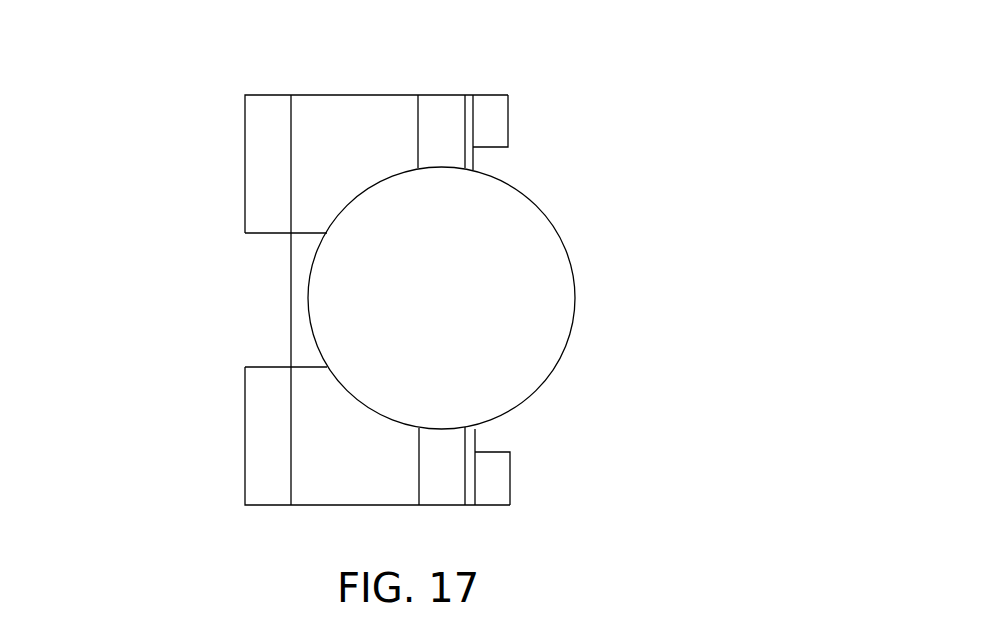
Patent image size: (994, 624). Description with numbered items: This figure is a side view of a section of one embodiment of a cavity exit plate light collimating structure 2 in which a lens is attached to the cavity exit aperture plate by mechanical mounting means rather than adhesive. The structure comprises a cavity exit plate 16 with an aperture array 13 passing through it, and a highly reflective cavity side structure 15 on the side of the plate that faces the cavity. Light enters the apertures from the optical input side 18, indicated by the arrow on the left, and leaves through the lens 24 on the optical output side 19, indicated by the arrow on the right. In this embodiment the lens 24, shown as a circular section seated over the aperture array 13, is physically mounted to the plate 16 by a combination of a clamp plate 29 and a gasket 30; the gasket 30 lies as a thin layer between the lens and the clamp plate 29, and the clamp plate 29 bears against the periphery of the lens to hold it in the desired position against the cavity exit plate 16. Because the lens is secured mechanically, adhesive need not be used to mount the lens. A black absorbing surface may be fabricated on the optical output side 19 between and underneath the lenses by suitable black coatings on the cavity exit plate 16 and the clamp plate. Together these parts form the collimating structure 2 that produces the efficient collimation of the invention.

The cavity exit plate light collimating structure 2 is at (624, 58).
The aperture array 13 is at (254, 301).
The highly reflective cavity side structure 15 is at (270, 137).
The cavity exit plate 16 is at (323, 485).
The optical input side 18 is at (160, 277).
The optical output side 19 is at (725, 279).
The lens 24 is at (543, 213).
The clamp plate 29 is at (495, 130).
The gasket 30 is at (468, 97).